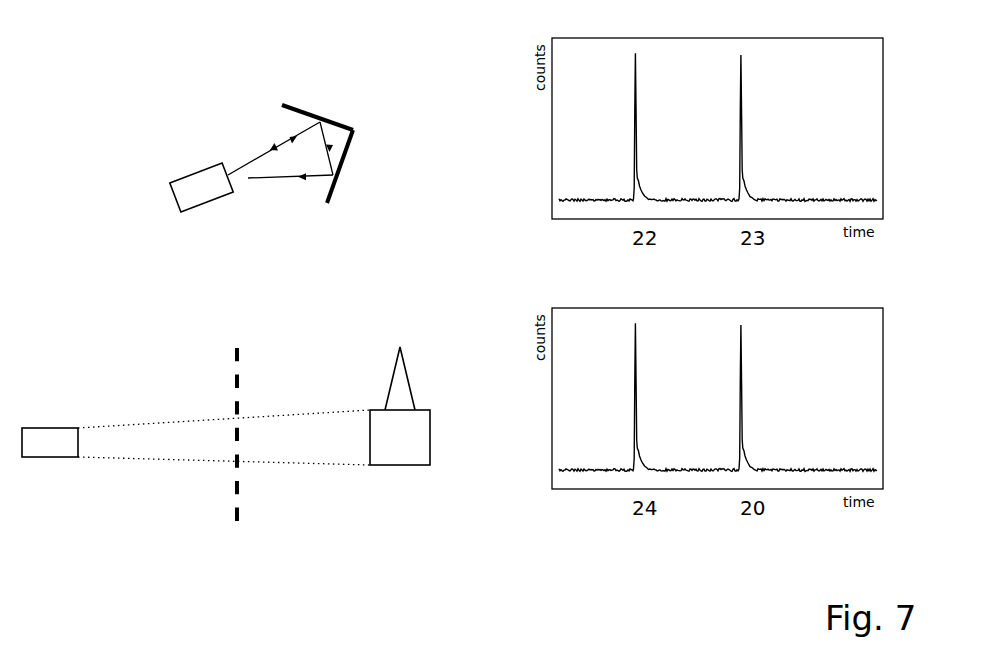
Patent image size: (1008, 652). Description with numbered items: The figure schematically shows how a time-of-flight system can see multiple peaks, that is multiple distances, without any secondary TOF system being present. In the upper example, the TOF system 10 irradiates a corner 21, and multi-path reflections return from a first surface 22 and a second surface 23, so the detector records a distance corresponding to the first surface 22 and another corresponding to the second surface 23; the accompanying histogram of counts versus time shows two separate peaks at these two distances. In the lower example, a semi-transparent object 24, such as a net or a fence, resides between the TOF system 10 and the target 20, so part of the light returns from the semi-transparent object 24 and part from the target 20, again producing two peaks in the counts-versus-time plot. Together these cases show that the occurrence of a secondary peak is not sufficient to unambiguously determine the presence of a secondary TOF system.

The TOF system 10 is at (188, 168).
The target 20 is at (437, 423).
The corner 21 is at (300, 101).
The first surface 22 is at (320, 121).
The second surface 23 is at (339, 184).
The semi-transparent object 24 is at (240, 523).